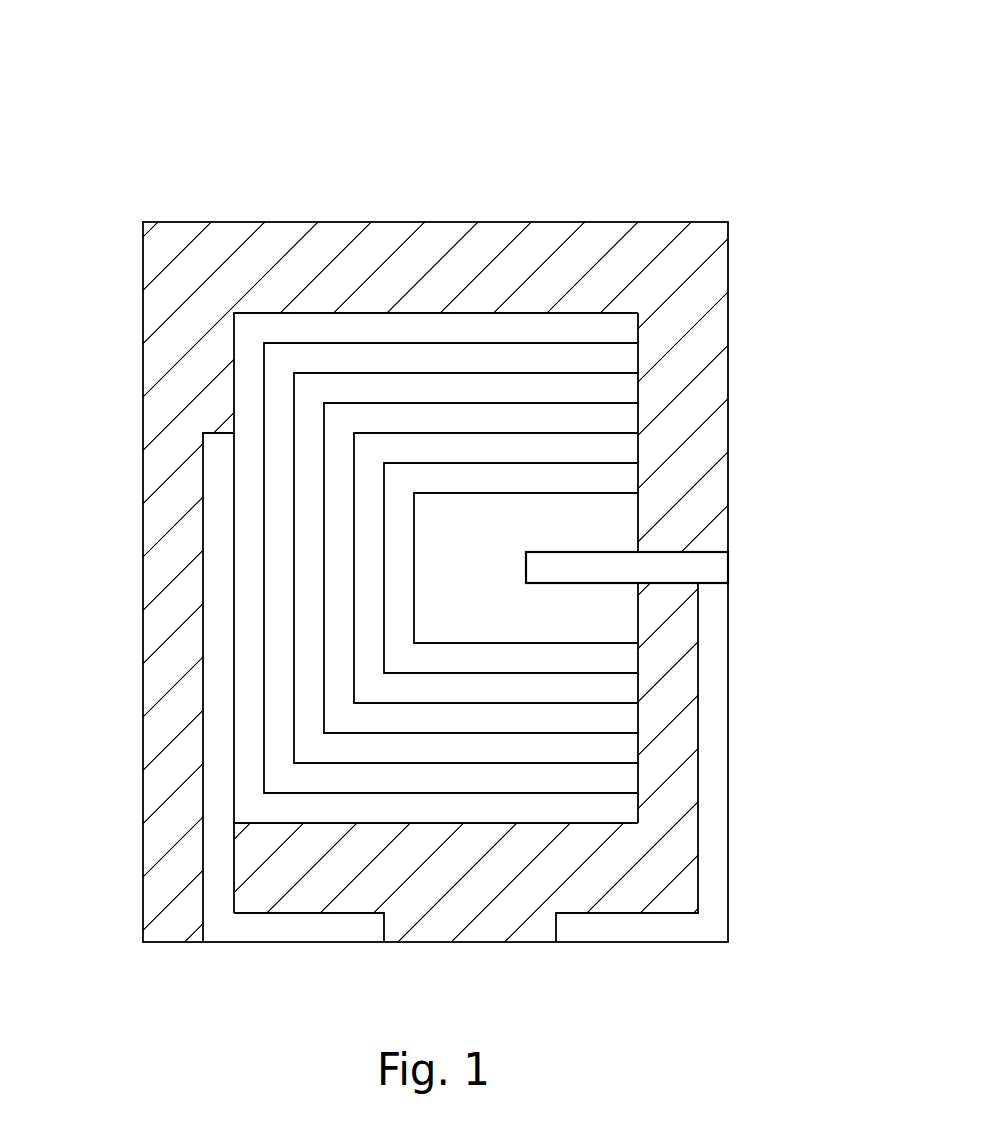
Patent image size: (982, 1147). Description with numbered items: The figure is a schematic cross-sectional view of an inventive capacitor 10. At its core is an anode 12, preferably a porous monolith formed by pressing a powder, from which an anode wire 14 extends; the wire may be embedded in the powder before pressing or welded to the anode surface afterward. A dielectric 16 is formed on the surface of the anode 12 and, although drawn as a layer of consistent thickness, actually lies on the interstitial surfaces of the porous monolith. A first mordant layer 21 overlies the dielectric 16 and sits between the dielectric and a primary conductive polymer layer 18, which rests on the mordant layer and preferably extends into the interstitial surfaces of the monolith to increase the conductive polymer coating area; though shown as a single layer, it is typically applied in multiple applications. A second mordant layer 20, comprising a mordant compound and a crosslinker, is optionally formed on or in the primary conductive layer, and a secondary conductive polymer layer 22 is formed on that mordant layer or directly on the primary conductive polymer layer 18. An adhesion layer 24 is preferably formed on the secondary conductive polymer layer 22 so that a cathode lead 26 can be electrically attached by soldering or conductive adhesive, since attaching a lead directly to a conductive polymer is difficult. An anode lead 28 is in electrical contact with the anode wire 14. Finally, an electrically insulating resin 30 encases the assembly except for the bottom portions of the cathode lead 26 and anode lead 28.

The capacitor 10 is at (703, 191).
The anode 12 is at (582, 524).
The anode wire 14 is at (706, 571).
The dielectric 16 is at (512, 480).
The primary conductive polymer layer 18 is at (407, 425).
The second mordant layer 20 is at (372, 388).
The first mordant layer 21 is at (458, 447).
The secondary conductive polymer layer 22 is at (318, 358).
The adhesion layer 24 is at (272, 327).
The cathode lead 26 is at (223, 643).
The anode lead 28 is at (715, 712).
The electrically insulating resin 30 is at (695, 292).